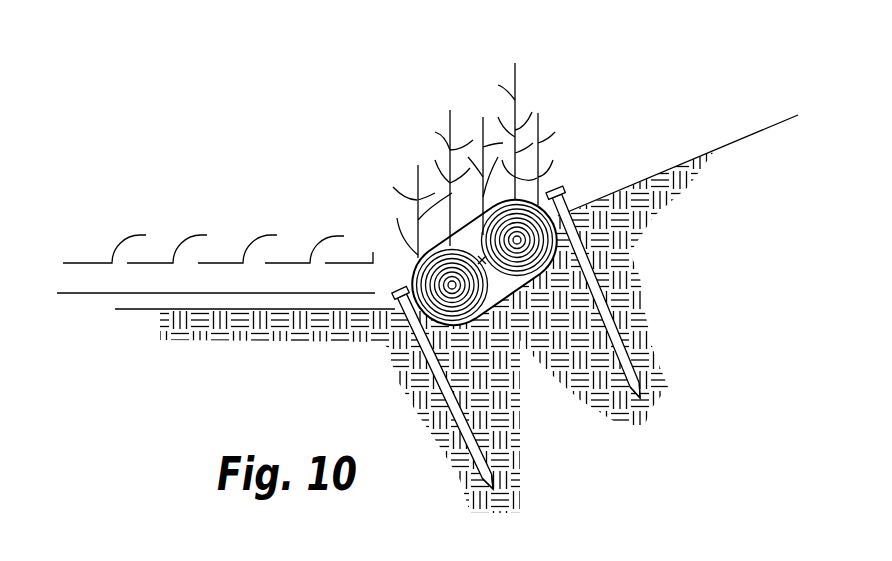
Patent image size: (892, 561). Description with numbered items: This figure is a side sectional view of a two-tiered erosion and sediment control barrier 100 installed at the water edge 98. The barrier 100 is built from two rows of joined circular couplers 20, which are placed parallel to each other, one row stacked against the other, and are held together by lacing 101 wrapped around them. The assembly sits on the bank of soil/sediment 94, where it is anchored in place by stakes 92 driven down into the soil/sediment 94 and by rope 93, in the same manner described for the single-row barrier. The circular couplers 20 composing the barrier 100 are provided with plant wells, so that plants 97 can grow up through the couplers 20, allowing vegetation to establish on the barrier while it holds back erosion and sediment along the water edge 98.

The two-tiered barrier 100 is at (369, 107).
The circular coupler 20 is at (417, 261).
The stakes 92 is at (426, 377).
The rope 93 is at (417, 272).
The soil/sediment 94 is at (690, 180).
The plants 97 is at (515, 76).
The water edge 98 is at (157, 277).
The lacing 101 is at (543, 290).